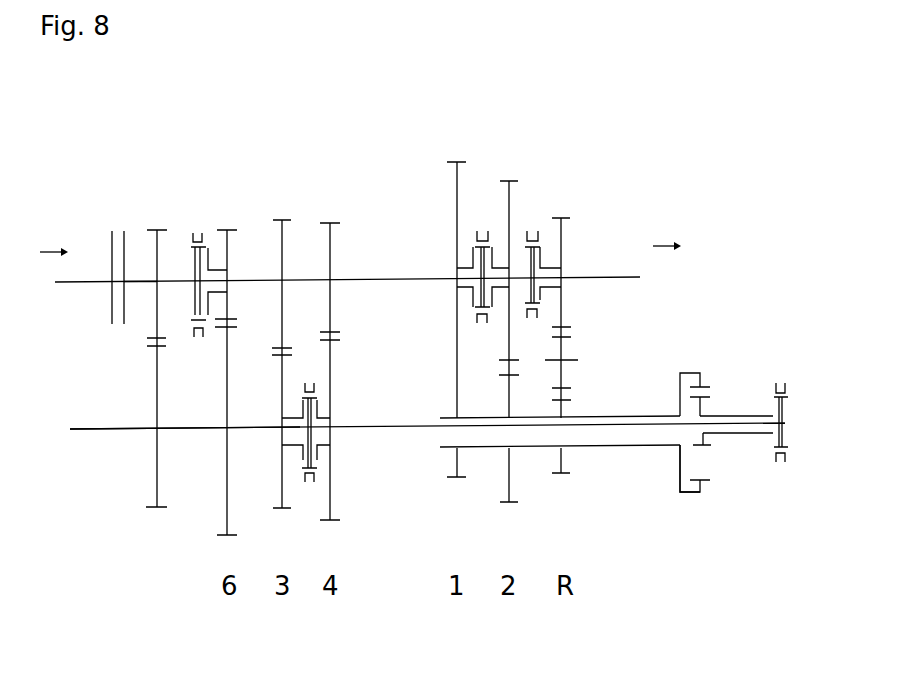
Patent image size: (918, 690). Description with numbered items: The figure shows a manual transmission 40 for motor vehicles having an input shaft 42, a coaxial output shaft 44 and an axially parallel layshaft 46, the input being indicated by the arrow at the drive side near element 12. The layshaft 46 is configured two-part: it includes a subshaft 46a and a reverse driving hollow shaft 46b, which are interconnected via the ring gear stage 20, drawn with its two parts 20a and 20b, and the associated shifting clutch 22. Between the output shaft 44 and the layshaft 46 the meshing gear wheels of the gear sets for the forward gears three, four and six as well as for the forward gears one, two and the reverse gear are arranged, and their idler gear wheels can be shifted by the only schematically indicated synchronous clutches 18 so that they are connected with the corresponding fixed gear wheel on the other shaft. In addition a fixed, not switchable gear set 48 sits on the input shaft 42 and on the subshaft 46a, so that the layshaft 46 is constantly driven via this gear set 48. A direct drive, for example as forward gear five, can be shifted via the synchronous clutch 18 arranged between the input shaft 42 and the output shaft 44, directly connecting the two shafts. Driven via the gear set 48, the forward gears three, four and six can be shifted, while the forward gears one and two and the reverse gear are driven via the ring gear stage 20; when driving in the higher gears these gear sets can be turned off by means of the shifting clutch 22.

The input / drive unit 12 is at (110, 258).
The input shaft 42 is at (143, 280).
The synchronous clutch 18 is at (203, 222).
The output shaft 44 is at (397, 277).
The transmission 40 is at (658, 165).
The layshaft 46 is at (395, 440).
The subshaft 46a is at (100, 430).
The reverse driving hollow shaft 46b is at (613, 448).
The gear set 48 is at (154, 520).
The ring gear stage 20 is at (690, 512).
The gear set first part 20a is at (683, 372).
The gear set second part 20b is at (705, 407).
The shifting clutch 22 is at (781, 372).